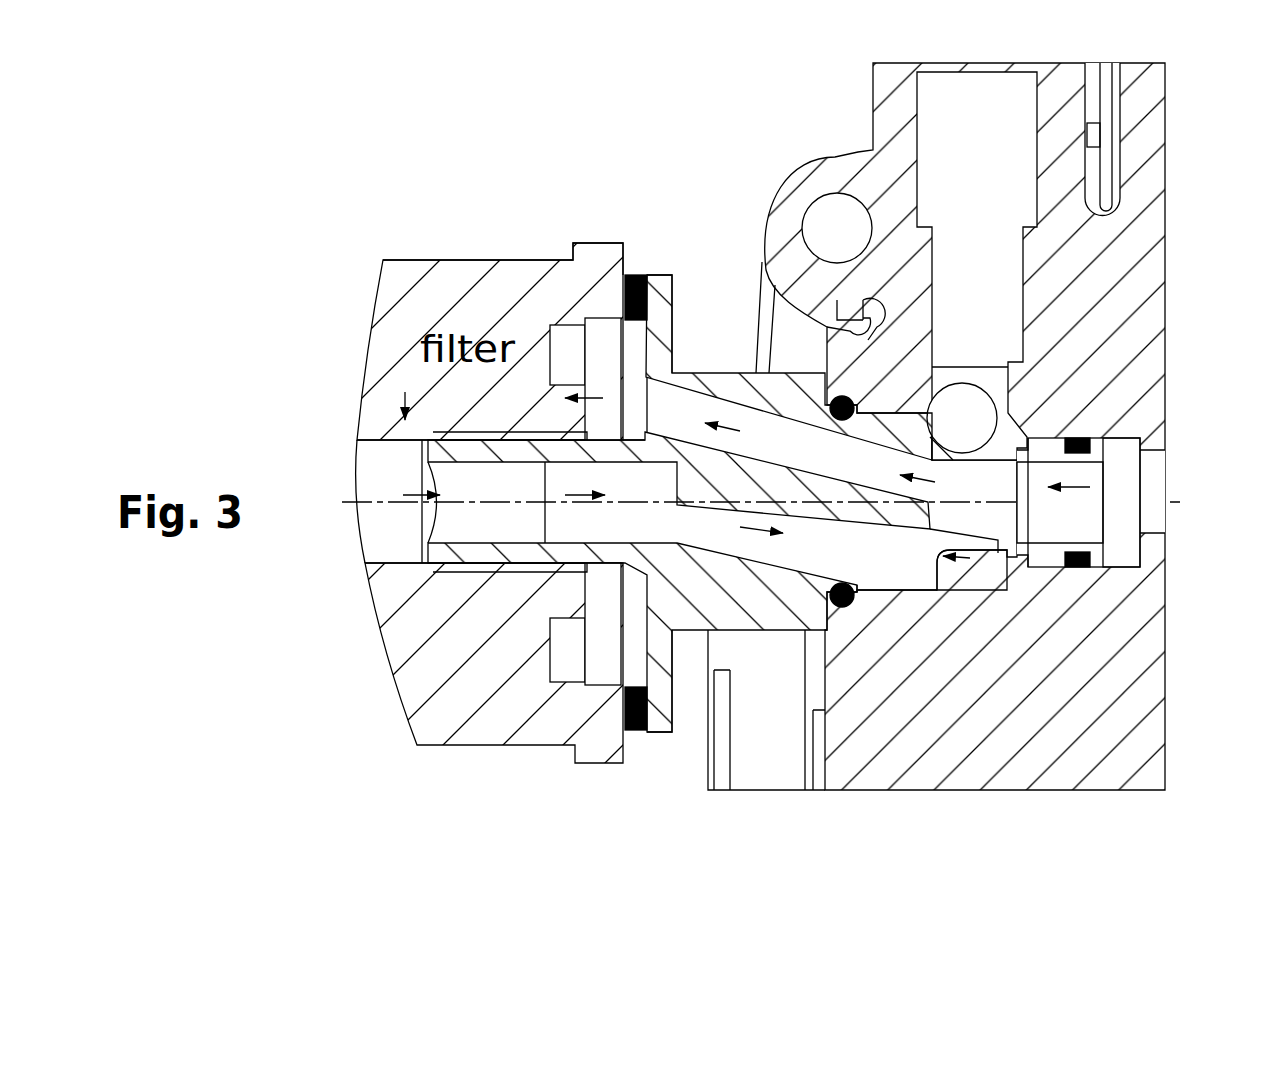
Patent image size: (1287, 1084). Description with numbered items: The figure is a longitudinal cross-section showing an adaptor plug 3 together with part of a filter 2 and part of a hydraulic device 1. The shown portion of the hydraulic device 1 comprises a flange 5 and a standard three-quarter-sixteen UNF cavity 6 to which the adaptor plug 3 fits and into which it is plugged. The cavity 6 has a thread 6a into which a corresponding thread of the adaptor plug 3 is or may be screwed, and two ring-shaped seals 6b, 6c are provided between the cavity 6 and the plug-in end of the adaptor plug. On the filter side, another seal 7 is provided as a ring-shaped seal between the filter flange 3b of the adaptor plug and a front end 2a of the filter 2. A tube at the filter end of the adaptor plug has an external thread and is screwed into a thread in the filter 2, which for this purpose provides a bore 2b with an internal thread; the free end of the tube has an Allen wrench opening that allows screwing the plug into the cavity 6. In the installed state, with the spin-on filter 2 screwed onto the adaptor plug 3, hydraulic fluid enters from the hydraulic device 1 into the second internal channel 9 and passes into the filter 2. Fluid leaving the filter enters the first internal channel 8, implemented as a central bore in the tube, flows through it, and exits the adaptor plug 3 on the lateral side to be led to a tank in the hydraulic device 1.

The hydraulic device 1 is at (1183, 310).
The filter 2 is at (439, 465).
The front end of the filter 2a is at (503, 268).
The bore of the filter 2b is at (388, 545).
The adaptor plug 3 is at (680, 505).
The filter flange of the adaptor plug 3b is at (662, 272).
The flange of the hydraulic device 5 is at (835, 158).
The cavity of the hydraulic device 6 is at (826, 350).
The thread of the cavity 6a is at (913, 609).
The ring-shaped seal 6b is at (843, 612).
The ring-shaped seal 6c is at (1083, 572).
The seal 7 is at (635, 737).
The first internal channel 8 is at (972, 550).
The second internal channel 9 is at (1147, 698).